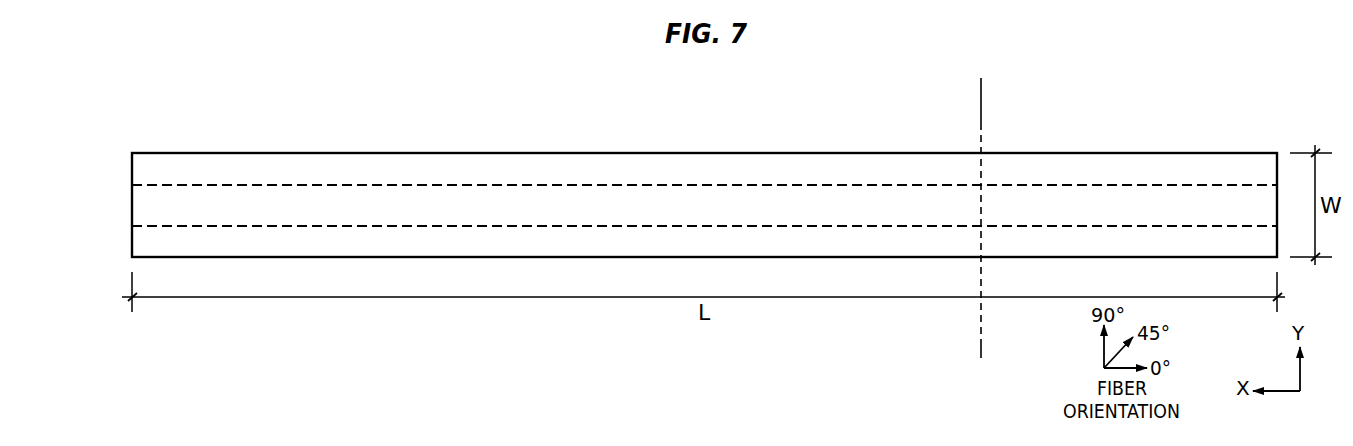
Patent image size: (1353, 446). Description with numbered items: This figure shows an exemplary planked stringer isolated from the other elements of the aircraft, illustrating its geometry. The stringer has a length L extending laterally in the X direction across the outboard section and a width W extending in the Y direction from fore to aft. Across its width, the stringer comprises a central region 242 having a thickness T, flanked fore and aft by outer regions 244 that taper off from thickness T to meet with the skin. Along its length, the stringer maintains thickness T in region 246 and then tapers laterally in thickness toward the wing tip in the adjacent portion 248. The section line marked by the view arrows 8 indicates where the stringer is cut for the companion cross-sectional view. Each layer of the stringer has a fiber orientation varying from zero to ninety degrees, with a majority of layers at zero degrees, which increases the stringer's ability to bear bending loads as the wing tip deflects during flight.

The outer regions 244 is at (121, 153).
The central region 242 is at (121, 186).
The region 246 is at (981, 139).
The second region of strip 248 is at (1277, 139).
The view arrows 8 is at (948, 87).